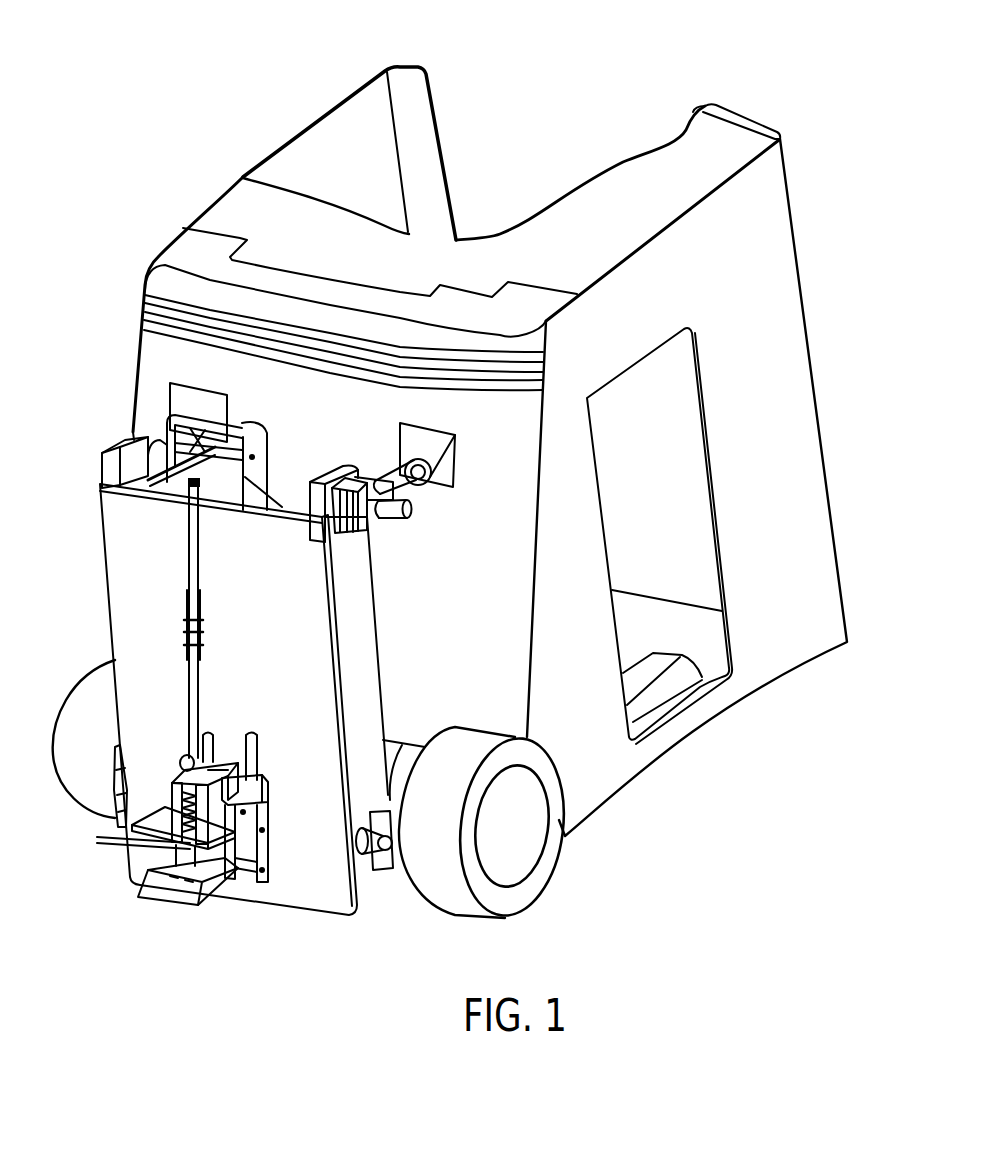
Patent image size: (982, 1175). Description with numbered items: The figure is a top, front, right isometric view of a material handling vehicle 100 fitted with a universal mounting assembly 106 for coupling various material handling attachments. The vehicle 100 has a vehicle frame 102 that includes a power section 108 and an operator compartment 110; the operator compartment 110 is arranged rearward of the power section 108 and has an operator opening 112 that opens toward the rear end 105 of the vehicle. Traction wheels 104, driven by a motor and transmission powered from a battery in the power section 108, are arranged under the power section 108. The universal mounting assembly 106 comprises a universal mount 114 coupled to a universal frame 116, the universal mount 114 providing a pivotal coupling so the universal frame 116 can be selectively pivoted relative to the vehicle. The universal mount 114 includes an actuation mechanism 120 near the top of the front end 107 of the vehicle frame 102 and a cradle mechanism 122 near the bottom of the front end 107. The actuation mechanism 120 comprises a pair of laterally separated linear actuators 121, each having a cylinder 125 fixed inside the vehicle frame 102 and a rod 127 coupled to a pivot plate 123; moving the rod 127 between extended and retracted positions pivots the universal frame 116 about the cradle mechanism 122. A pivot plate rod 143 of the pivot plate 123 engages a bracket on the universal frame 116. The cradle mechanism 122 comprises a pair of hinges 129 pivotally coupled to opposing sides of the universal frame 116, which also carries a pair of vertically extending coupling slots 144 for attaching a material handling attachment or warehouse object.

The material handling vehicle 100 is at (162, 56).
The vehicle frame 102 is at (684, 714).
The traction wheels 104 is at (503, 867).
The rear end 105 is at (750, 115).
The universal mounting assembly 106 is at (78, 420).
The front end 107 is at (200, 358).
The power section 108 is at (277, 296).
The operator compartment 110 is at (415, 140).
The operator opening 112 is at (528, 154).
The universal mount 114 is at (432, 510).
The universal frame 116 is at (304, 864).
The actuation mechanism 120 is at (390, 445).
The linear actuators 121 is at (437, 457).
The cradle mechanism 122 is at (115, 841).
The pivot plate 123 is at (417, 500).
The cylinder 125 is at (208, 402).
The rod 127 is at (128, 410).
The hinges 129 is at (98, 843).
The pivot plate rod 143 is at (397, 527).
The coupling slots 144 is at (250, 743).